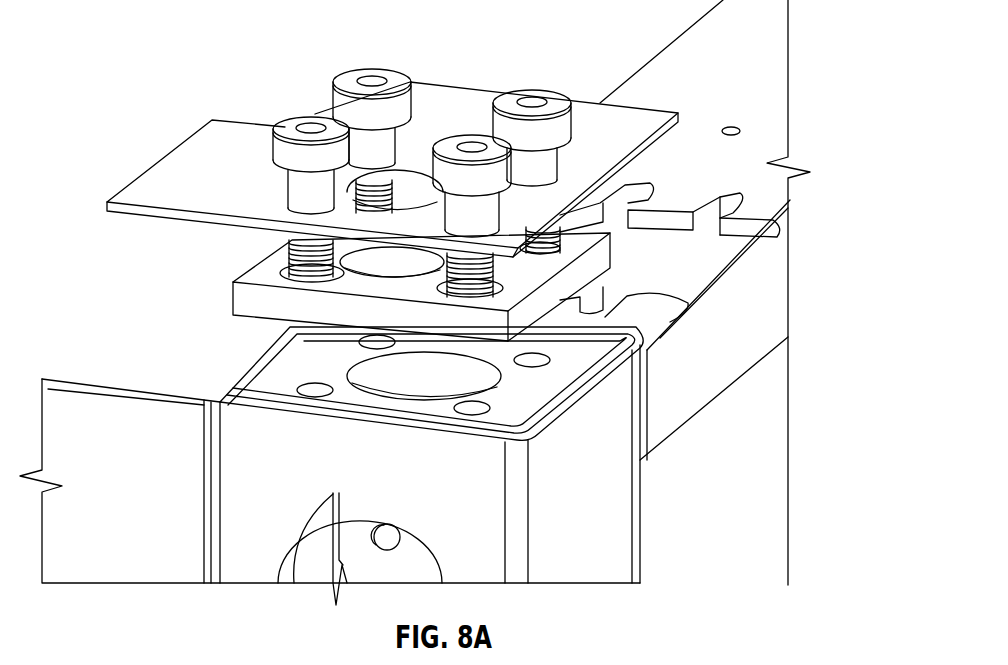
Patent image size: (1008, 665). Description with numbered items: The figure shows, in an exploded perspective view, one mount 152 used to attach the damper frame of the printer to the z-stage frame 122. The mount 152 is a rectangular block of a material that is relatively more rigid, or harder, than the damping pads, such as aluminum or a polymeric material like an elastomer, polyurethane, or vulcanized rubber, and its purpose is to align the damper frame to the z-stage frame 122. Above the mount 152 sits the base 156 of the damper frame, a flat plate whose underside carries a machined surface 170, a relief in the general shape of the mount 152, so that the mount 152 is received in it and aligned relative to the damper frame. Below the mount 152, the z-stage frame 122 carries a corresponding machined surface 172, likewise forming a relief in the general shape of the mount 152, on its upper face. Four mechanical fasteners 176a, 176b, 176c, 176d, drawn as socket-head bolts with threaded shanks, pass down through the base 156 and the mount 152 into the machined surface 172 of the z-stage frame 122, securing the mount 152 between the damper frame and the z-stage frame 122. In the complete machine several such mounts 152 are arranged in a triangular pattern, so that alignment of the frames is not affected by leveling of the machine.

The z-stage frame 122 is at (791, 517).
The mount 152 is at (233, 310).
The base 156 is at (657, 123).
The machined surface 170 is at (250, 230).
The machined surface 172 is at (263, 393).
The mechanical fastener 176a is at (490, 142).
The mechanical fastener 176b is at (560, 98).
The mechanical fastener 176c is at (386, 72).
The mechanical fastener 176d is at (292, 124).